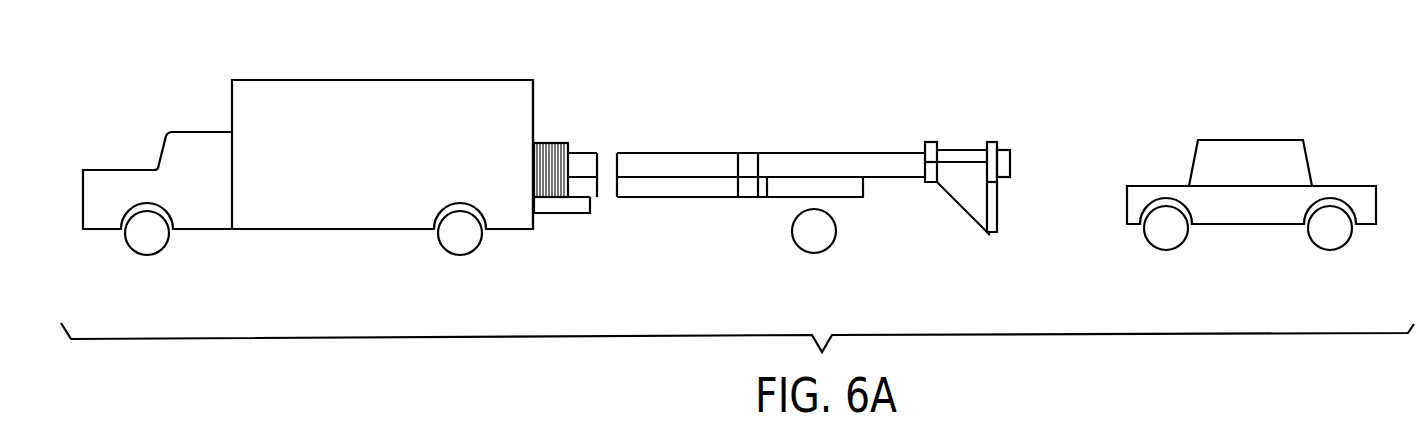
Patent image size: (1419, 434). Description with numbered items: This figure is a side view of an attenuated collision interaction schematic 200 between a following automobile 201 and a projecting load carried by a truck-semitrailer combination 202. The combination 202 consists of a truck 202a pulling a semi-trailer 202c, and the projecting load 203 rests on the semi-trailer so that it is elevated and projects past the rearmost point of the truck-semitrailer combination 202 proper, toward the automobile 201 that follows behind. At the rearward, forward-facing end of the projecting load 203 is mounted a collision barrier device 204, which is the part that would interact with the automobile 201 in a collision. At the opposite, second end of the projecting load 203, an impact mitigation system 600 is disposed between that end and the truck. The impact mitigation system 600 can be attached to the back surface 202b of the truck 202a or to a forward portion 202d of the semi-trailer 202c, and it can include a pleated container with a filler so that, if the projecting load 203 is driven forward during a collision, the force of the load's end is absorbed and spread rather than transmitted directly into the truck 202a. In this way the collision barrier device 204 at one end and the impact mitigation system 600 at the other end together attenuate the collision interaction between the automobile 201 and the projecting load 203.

The attenuated collision interaction schematic 200 is at (335, 136).
The automobile 201 is at (1237, 138).
The truck-semitrailer combination 202 is at (593, 190).
The truck 202a is at (342, 80).
The back surface of the truck 202b is at (534, 105).
The semi-trailer 202c is at (673, 197).
The forward portion of the semi-trailer 202d is at (552, 213).
The projecting load 203 is at (878, 150).
The collision barrier device 204 is at (993, 237).
The impact mitigation system 600 is at (572, 145).